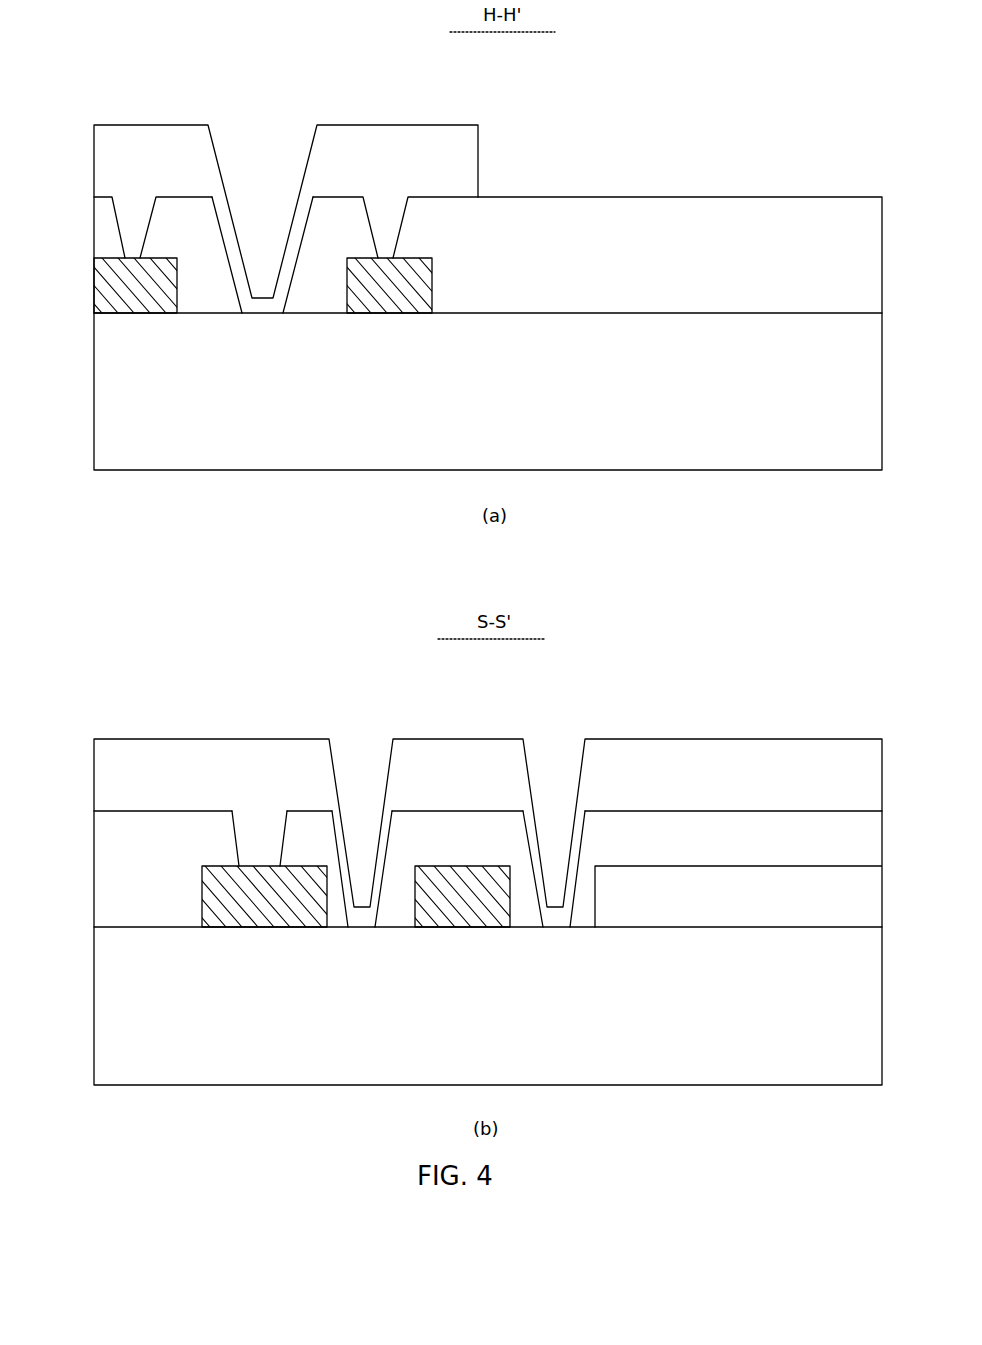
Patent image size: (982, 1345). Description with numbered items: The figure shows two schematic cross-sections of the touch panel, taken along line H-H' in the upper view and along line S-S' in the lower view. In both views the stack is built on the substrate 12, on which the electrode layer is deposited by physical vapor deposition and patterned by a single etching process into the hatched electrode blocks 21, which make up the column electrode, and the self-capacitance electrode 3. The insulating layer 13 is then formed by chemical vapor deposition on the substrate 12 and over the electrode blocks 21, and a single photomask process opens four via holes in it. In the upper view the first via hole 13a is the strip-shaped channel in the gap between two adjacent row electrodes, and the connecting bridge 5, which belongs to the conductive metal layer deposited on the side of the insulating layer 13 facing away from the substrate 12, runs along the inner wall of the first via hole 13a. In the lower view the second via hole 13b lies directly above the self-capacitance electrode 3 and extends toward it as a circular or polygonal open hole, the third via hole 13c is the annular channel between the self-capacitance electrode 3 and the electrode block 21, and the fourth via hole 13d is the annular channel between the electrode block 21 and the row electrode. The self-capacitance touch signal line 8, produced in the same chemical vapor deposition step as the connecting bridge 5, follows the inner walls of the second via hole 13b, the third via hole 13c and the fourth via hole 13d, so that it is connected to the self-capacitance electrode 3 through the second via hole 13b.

The substrate 12 is at (88, 313).
The insulating layer 13 is at (88, 197).
The connecting bridge 5 is at (136, 146).
The self-capacitance touch signal line 8 is at (118, 757).
The self-capacitance electrode 3 is at (202, 867).
The electrode block 21 is at (165, 270).
The first via hole 13a is at (262, 276).
The second via hole 13b is at (257, 866).
The third via hole 13c is at (363, 875).
The fourth via hole 13d is at (556, 875).